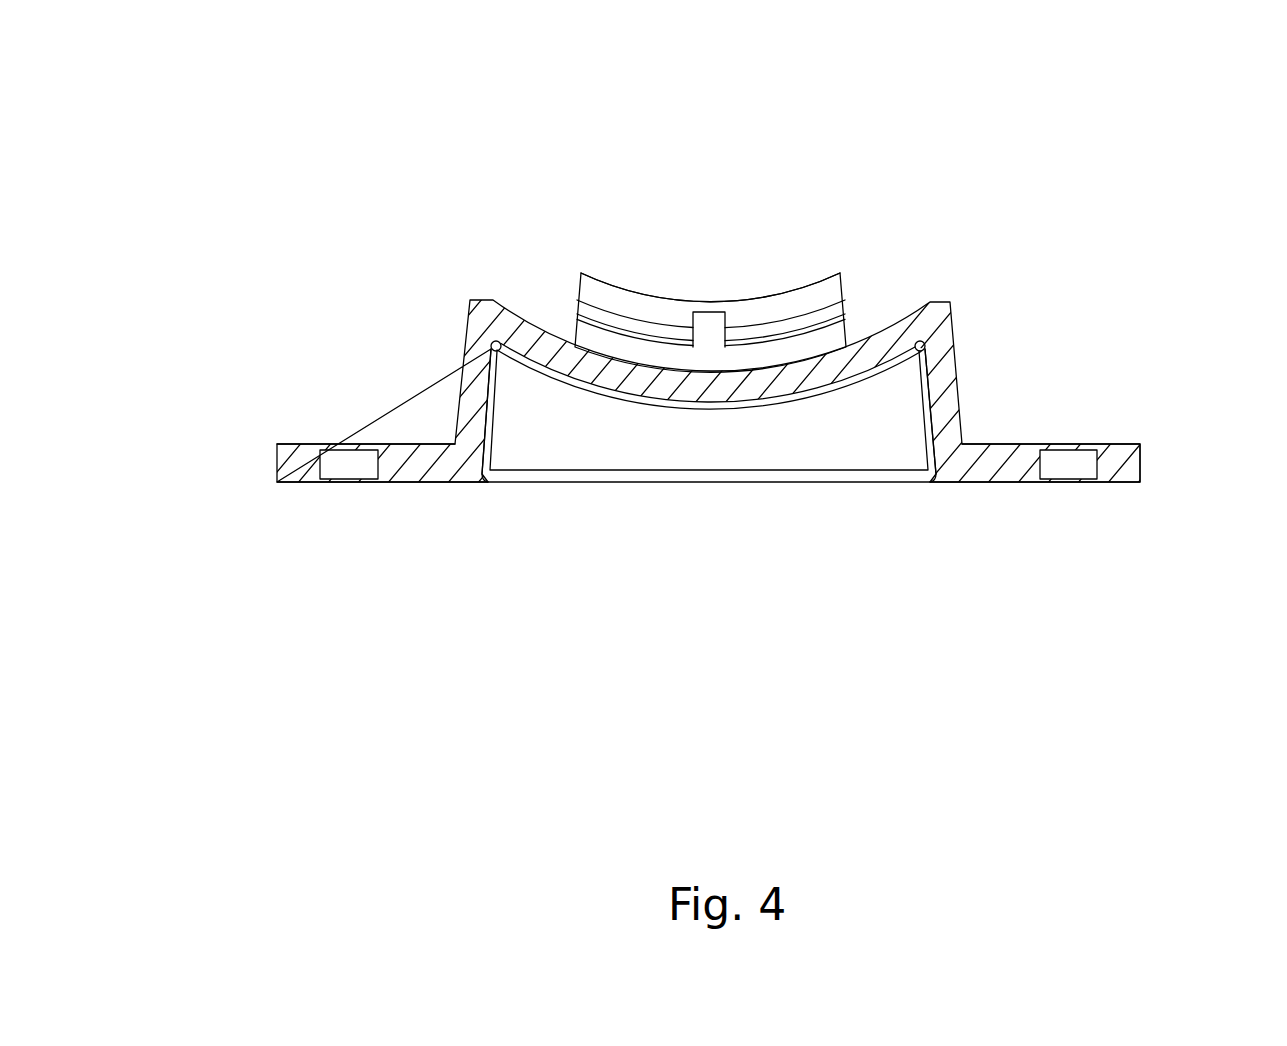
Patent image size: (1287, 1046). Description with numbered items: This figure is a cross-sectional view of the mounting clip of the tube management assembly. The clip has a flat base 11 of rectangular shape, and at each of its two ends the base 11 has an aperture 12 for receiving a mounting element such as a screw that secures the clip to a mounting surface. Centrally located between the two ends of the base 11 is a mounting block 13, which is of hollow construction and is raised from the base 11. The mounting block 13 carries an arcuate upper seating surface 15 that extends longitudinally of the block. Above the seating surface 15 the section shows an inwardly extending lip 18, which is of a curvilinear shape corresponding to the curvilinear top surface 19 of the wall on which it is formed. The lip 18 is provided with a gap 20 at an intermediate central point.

The base 11 is at (1128, 472).
The aperture 12 is at (323, 463).
The mounting block 13 is at (945, 377).
The arcuate upper seating surface 15 is at (855, 338).
The lip 18 is at (598, 312).
The curvilinear top surface 19 is at (765, 290).
The gap 20 is at (722, 335).